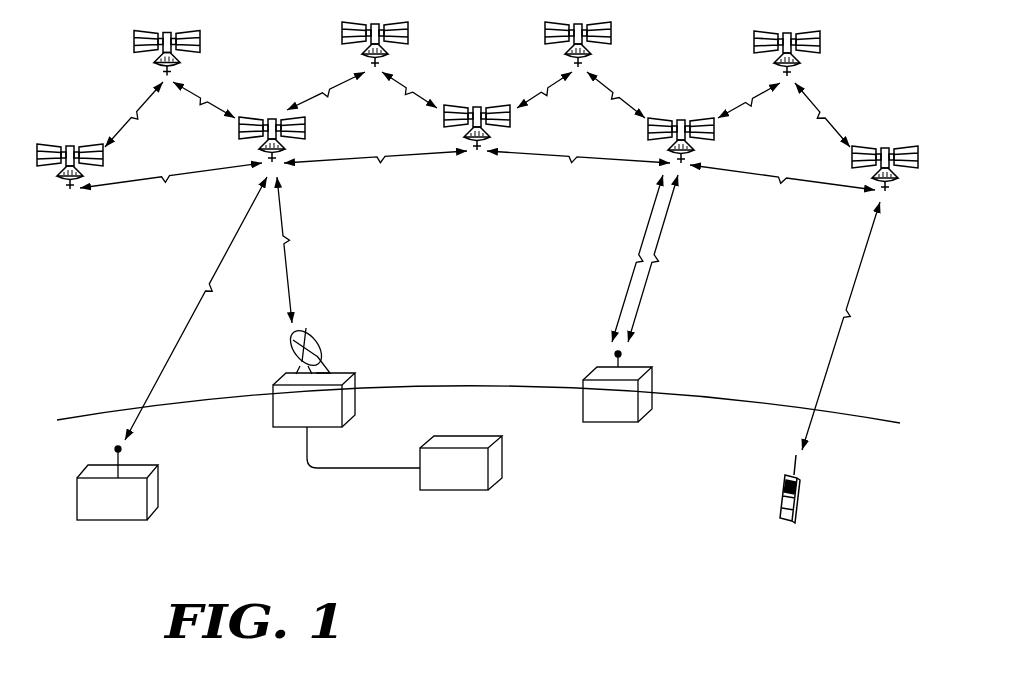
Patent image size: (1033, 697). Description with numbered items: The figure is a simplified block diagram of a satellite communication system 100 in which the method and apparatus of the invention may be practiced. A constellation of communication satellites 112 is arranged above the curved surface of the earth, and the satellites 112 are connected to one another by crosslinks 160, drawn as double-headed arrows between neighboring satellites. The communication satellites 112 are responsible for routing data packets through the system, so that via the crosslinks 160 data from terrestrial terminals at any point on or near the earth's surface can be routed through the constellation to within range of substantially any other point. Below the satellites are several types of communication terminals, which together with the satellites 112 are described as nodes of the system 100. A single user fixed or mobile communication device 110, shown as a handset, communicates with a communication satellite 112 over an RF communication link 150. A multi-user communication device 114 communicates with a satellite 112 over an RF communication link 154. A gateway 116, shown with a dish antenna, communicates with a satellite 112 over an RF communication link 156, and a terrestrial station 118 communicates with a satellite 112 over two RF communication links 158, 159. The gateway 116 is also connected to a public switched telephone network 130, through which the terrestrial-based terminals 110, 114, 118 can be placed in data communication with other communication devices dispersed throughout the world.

The satellite communication system 100 is at (481, 607).
The single user communication device 110 is at (782, 479).
The communication satellite 112 is at (787, 27).
The multi-user communication device 114 is at (153, 488).
The gateway 116 is at (355, 398).
The terrestrial station 118 is at (652, 385).
The public switched telephone network 130 is at (498, 463).
The RF communication link 150 is at (838, 357).
The RF communication link 154 is at (183, 341).
The RF communication link 156 is at (299, 277).
The RF communication link 158 is at (622, 292).
The RF communication link 159 is at (640, 295).
The crosslink 160 is at (206, 101).